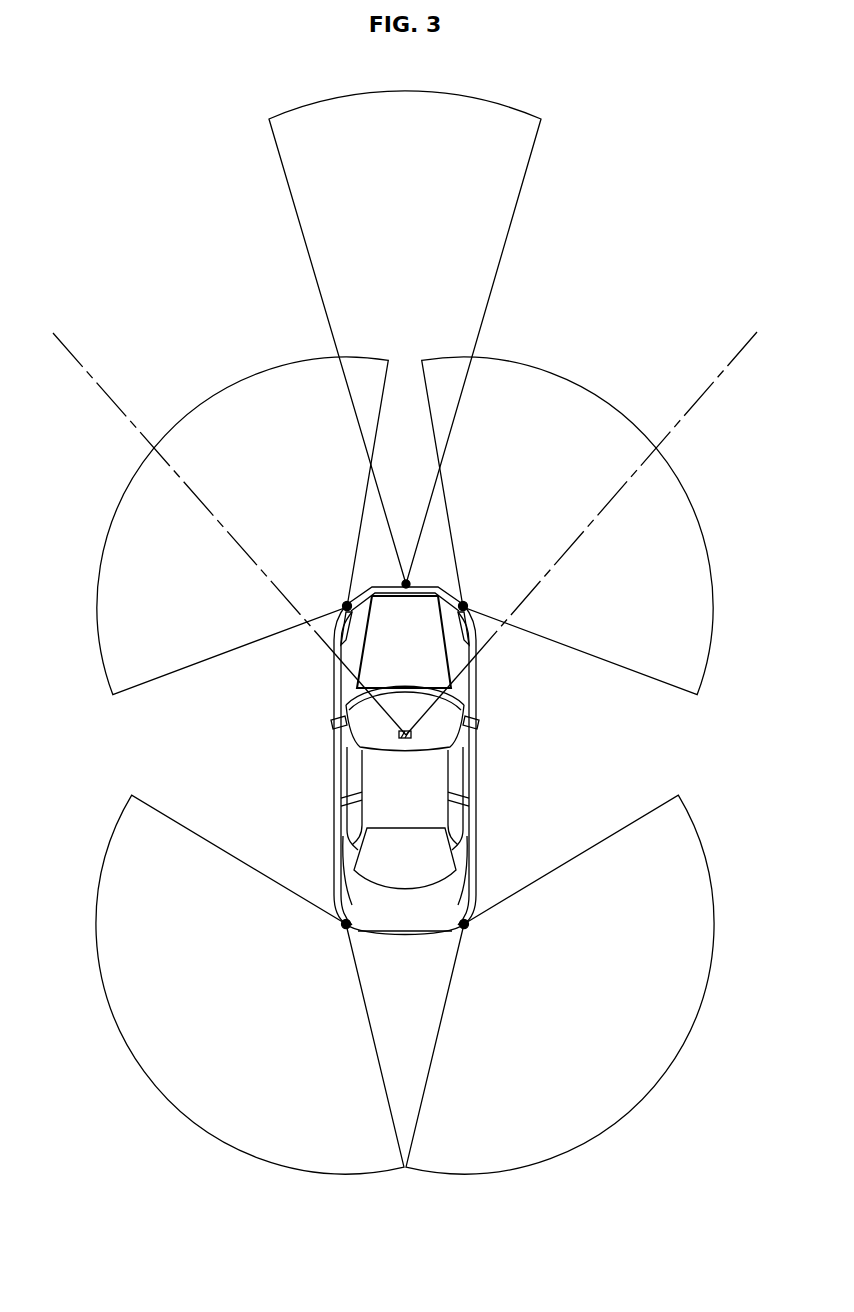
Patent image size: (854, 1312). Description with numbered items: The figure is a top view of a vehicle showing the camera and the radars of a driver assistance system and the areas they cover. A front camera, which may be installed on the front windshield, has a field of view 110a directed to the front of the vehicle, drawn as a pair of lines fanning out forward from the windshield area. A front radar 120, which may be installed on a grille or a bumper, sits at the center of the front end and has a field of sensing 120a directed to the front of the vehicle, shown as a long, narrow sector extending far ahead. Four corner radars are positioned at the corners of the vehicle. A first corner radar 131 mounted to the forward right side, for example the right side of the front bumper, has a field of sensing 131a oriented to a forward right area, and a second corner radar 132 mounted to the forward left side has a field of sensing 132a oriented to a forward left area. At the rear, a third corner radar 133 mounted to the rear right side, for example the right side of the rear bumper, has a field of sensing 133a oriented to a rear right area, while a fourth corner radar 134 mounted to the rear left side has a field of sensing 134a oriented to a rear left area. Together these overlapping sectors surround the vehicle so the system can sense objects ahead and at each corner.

The field of view 110a is at (715, 380).
The front radar 120 is at (406, 584).
The field of sensing 120a is at (488, 222).
The first corner radar 131 is at (463, 606).
The field of sensing 131a is at (595, 407).
The second corner radar 132 is at (347, 606).
The field of sensing 132a is at (215, 407).
The third corner radar 133 is at (464, 924).
The field of sensing 133a is at (672, 1055).
The fourth corner radar 134 is at (346, 924).
The field of sensing 134a is at (138, 1055).